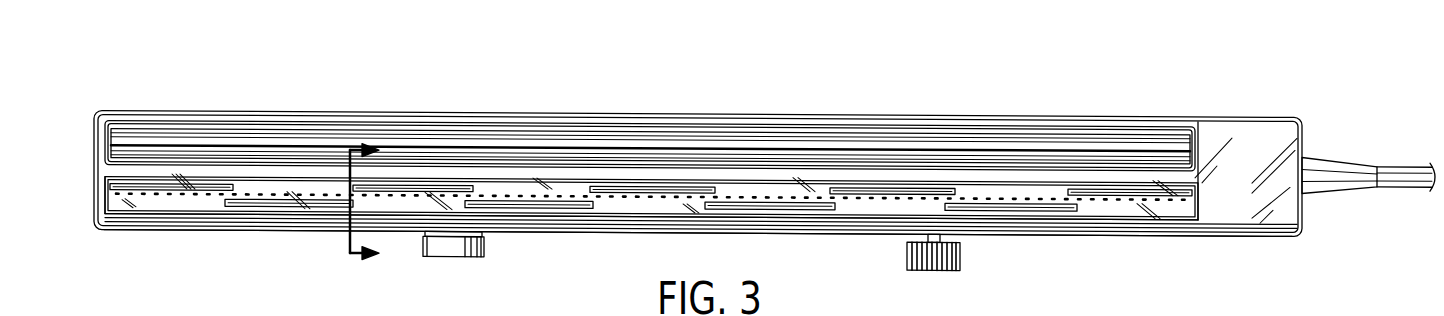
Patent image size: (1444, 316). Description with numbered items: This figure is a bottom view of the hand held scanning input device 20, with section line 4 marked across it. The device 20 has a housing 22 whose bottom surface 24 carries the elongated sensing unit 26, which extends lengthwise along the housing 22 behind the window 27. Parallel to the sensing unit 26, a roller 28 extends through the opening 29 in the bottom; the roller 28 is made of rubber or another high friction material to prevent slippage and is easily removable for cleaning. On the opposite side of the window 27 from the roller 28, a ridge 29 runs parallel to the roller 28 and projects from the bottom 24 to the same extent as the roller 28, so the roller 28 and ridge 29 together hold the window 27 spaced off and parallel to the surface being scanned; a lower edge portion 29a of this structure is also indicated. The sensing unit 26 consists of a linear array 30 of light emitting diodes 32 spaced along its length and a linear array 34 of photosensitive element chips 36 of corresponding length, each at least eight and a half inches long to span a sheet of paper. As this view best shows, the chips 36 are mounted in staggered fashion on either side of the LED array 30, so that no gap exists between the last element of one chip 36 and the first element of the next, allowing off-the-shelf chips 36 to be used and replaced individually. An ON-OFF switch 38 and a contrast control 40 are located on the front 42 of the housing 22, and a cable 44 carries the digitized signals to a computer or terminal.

The hand held scanning input device 20 is at (739, 151).
The housing 22 is at (1210, 109).
The bottom surface 24 is at (1217, 181).
The sensing unit 26 is at (640, 203).
The window 27 is at (1177, 214).
The roller 28 is at (608, 141).
The ridge 29 is at (677, 126).
The tube bottom portion 29a is at (1258, 221).
The linear array of light emitting diodes 30 is at (101, 190).
The light emitting diodes 32 is at (170, 193).
The linear array of photosensitive element chips 34 is at (1080, 202).
The photosensitive element chips 36 is at (247, 205).
The ON-OFF switch 38 is at (962, 256).
The contrast control 40 is at (485, 248).
The front 42 is at (190, 230).
The cable 44 is at (1393, 167).
The section line 4- 4 is at (373, 200).